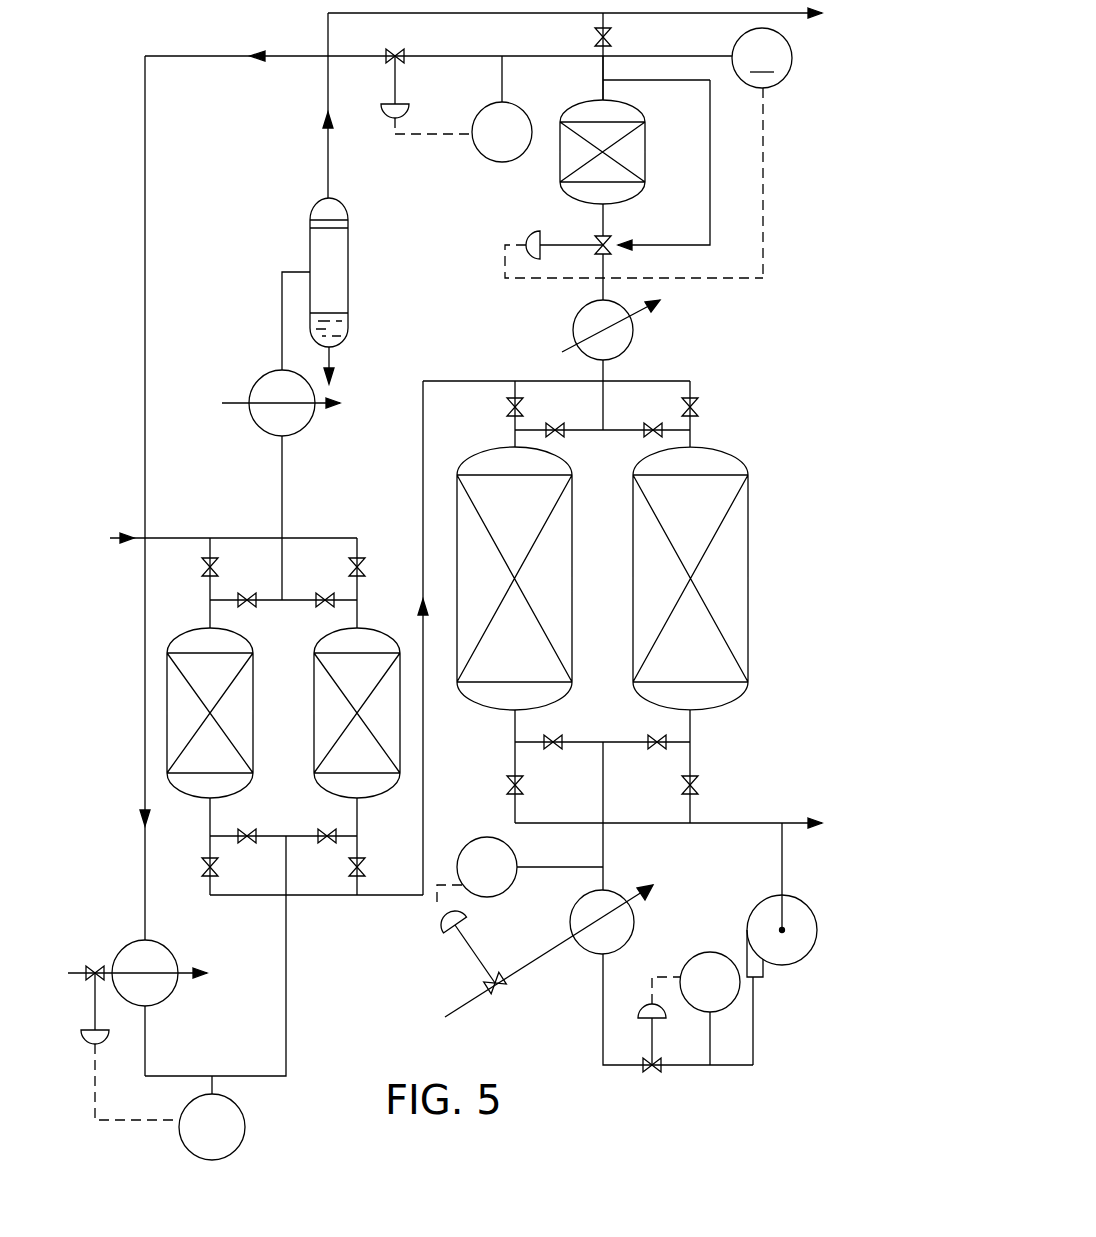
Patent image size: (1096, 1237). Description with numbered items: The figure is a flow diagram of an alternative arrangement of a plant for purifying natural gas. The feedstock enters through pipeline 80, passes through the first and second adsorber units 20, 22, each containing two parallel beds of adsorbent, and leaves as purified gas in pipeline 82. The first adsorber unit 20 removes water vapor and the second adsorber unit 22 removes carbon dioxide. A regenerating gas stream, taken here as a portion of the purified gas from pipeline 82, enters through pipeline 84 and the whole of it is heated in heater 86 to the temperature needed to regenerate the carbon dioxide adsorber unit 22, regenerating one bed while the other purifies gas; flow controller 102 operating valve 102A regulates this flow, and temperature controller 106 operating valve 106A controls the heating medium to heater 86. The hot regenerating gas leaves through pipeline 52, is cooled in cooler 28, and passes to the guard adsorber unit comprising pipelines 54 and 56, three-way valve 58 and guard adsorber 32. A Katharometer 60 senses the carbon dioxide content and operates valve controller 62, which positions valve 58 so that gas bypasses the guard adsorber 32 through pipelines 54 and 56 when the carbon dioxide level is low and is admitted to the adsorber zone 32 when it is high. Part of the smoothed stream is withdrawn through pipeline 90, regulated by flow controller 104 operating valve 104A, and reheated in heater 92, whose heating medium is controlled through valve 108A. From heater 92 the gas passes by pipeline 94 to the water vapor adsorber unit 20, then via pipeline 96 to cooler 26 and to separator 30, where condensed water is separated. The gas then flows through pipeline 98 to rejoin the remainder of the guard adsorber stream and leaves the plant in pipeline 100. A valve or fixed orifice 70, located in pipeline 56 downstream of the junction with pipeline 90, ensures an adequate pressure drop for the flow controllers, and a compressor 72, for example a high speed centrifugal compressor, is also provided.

The first adsorber unit 20 is at (167, 710).
The second adsorber unit 22 is at (748, 598).
The cooler 26 is at (306, 418).
The cooler 28 is at (634, 330).
The separator 30 is at (349, 262).
The guard adsorber 32 is at (646, 146).
The pipeline 52 is at (608, 370).
The pipeline 54 is at (711, 192).
The pipeline 56 is at (603, 80).
The three-way valve 58 is at (612, 241).
The Katharometer 60 is at (762, 153).
The valve controller 62 is at (531, 228).
The valve or fixed orifice 70 is at (612, 38).
The compressor 72 is at (790, 965).
The pipeline 80 is at (127, 537).
The pipeline 82 is at (737, 822).
The pipeline 84 is at (738, 1070).
The heater 86 is at (634, 920).
The pipeline 90 is at (145, 363).
The heater 92 is at (170, 995).
The pipeline 94 is at (288, 979).
The pipeline 96 is at (283, 492).
The pipeline 98 is at (326, 150).
The pipeline 100 is at (711, 13).
The flow controller 102 is at (709, 951).
The valve 102A is at (655, 1080).
The flow controller 104 is at (526, 116).
The valve 104A is at (408, 68).
The temperature controller 106 is at (487, 853).
The valve 106A is at (500, 986).
The valve 108A is at (92, 963).